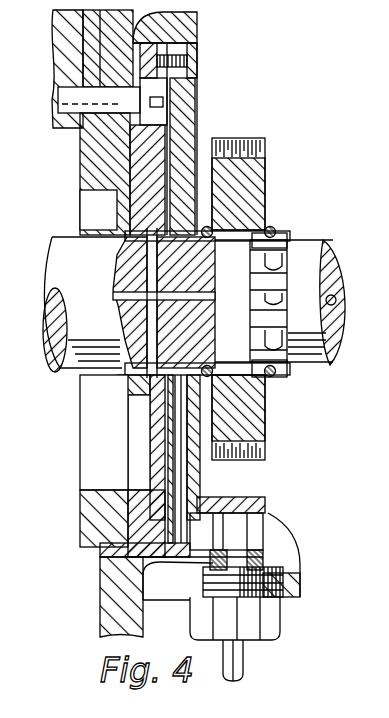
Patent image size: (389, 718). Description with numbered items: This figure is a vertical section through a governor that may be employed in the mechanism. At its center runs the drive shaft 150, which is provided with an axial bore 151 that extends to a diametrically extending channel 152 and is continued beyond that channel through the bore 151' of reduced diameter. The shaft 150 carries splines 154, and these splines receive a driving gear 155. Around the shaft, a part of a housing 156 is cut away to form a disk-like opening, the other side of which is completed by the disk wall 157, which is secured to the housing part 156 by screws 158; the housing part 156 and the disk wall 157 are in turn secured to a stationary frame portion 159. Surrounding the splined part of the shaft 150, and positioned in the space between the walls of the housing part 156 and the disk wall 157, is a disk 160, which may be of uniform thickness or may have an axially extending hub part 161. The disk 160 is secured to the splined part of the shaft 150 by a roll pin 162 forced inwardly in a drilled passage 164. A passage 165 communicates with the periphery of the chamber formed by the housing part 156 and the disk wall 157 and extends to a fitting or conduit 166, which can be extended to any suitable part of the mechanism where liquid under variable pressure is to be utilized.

The drive shaft 150 is at (300, 247).
The axial bore 151 is at (64, 304).
The bore of reduced diameter 151' is at (284, 301).
The diametrically extending channel 152 is at (147, 325).
The splines 154 is at (280, 348).
The driving gear 155 is at (258, 400).
The housing part 156 is at (140, 200).
The disk wall 157 is at (186, 80).
The screws 158 is at (188, 58).
The stationary frame portion 159 is at (85, 155).
The disk 160 is at (190, 100).
The hub part 161 is at (180, 378).
The roll pin 162 is at (173, 405).
The drilled passage 164 is at (173, 486).
The passage 165 is at (237, 515).
The fitting or conduit 166 is at (245, 538).